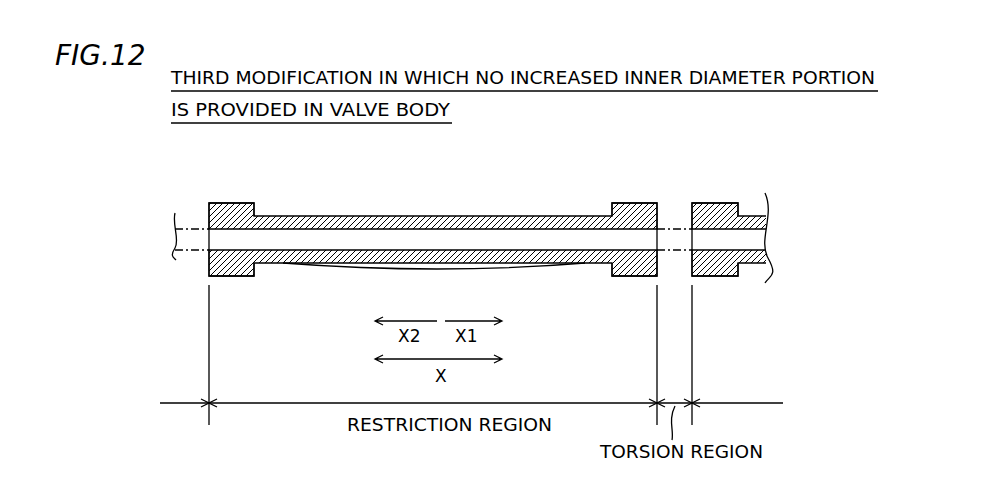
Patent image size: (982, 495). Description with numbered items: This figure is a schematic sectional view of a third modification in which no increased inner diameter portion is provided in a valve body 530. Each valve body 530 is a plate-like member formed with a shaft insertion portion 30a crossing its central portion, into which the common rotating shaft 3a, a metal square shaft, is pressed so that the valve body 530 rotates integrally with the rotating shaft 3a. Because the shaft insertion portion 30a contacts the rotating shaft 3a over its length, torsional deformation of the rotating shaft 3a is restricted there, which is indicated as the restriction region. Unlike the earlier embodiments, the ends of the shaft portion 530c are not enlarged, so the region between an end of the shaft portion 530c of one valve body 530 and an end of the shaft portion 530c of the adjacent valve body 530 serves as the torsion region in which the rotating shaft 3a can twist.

The valve body 530 is at (453, 215).
The shaft portion 530c is at (240, 278).
The shaft insertion portion 30a is at (347, 233).
The rotating shaft 3a is at (668, 226).